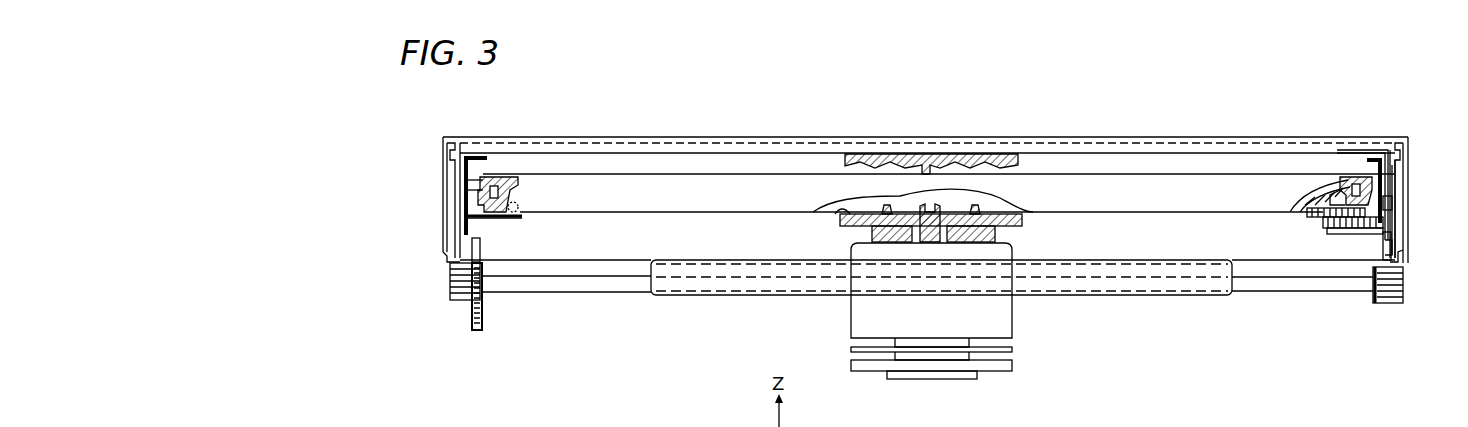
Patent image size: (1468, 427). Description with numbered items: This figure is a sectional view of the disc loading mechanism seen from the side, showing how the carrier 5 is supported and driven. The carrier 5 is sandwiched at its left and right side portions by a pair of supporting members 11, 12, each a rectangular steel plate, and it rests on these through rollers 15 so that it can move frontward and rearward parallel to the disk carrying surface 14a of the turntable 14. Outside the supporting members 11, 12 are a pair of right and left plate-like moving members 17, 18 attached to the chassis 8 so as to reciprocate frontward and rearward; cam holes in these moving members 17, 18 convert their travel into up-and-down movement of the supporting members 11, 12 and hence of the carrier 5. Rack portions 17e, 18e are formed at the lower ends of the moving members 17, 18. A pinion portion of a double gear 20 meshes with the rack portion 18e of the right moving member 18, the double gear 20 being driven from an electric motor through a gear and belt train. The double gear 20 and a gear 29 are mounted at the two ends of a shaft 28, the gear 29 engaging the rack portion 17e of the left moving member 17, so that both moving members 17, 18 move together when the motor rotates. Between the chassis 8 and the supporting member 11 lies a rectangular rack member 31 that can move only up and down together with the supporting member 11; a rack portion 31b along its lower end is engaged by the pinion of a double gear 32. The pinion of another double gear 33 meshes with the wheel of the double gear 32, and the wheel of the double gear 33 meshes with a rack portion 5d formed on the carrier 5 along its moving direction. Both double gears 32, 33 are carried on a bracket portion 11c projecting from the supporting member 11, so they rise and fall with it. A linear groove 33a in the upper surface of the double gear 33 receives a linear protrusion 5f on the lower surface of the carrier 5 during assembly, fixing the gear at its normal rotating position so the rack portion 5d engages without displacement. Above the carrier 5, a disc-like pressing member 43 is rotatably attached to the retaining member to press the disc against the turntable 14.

The carrier 5 is at (1180, 172).
The rack portion 5d is at (1386, 204).
The linear protrusion 5f is at (1353, 178).
The chassis 8 is at (482, 246).
The supporting member 11 is at (1376, 152).
The bracket portion 11c is at (1330, 232).
The supporting member 12 is at (495, 163).
The turntable 14 is at (853, 234).
The disk carrying surface 14a is at (838, 218).
The rollers 15 is at (497, 190).
The moving member 17 is at (1402, 172).
The rack portion 17e is at (1403, 259).
The moving member 18 is at (452, 183).
The rack portion 18e is at (448, 262).
The double gear 20 is at (466, 306).
The shaft 28 is at (1246, 283).
The gear 29 is at (1396, 298).
The rack member 31 is at (1396, 182).
The rack portion 31b is at (1394, 228).
The double gear 32 is at (1350, 232).
The double gear 33 is at (1310, 216).
The linear groove 33a is at (1330, 183).
The pressing member 43 is at (1024, 158).